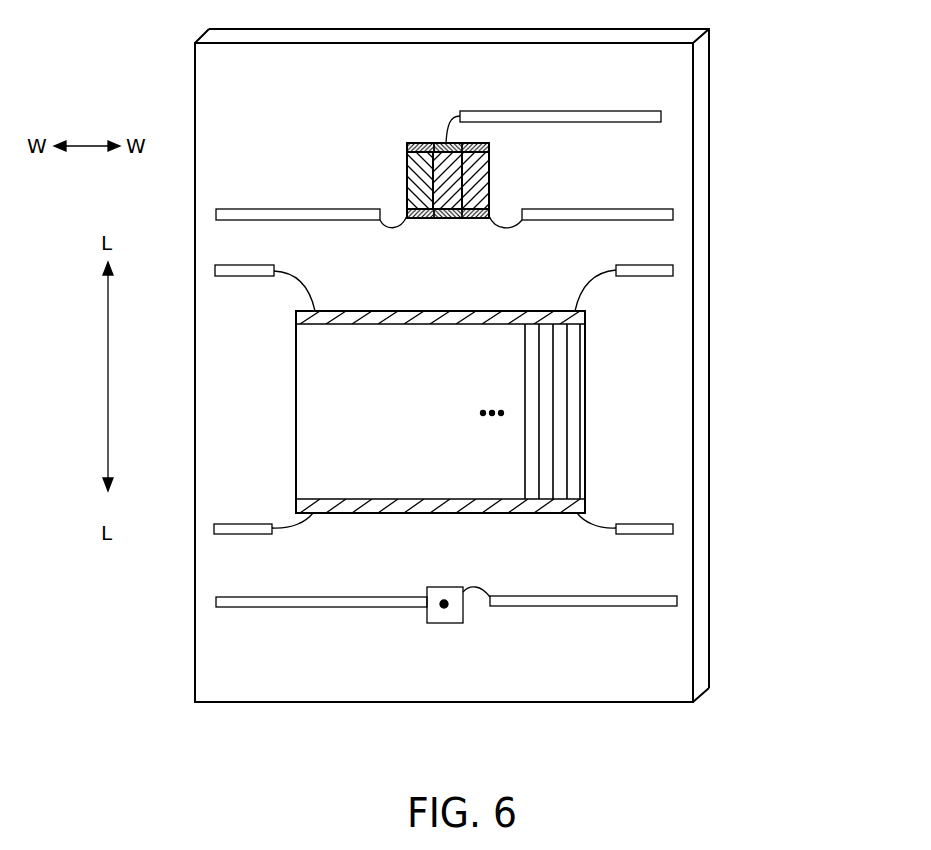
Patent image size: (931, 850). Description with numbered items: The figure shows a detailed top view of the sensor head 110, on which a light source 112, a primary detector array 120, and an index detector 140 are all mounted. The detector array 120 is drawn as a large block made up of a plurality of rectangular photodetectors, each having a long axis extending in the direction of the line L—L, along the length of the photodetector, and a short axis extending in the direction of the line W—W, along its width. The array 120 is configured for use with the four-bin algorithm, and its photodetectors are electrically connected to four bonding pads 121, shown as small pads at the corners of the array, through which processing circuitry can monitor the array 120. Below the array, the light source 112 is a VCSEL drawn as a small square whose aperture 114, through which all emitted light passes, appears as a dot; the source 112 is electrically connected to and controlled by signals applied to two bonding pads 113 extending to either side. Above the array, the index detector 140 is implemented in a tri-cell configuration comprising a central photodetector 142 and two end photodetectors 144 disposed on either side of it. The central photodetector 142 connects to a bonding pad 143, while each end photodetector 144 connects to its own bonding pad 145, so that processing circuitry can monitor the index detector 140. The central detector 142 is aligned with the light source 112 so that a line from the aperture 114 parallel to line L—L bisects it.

The sensor head 110 is at (714, 40).
The light source 112 is at (464, 630).
The bonding pads 113 is at (280, 597).
The aperture 114 is at (443, 609).
The primary detector array 120 is at (591, 404).
The bonding pads 121 is at (247, 277).
The index detector 140 is at (463, 177).
The central photodetector 142 is at (438, 143).
The bonding pad 143 is at (548, 111).
The end photodetectors 144 is at (414, 143).
The bonding pads 145 is at (259, 208).